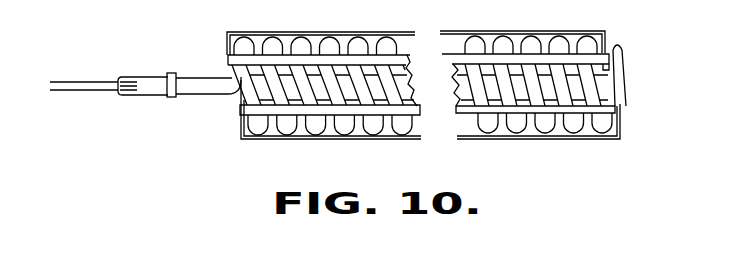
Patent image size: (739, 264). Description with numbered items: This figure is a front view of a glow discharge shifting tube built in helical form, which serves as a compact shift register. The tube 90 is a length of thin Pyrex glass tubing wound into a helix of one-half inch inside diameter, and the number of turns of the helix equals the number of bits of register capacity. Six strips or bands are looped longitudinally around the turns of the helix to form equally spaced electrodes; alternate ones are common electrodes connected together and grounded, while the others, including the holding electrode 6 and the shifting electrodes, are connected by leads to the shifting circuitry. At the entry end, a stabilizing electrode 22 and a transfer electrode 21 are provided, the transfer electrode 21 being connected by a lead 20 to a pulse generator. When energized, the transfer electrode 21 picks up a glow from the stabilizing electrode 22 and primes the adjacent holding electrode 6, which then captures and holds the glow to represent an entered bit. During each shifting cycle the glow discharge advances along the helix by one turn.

The holding electrode 6 is at (282, 32).
The tube 90 is at (372, 127).
The lead 20 is at (171, 155).
The transfer electrode 21 is at (167, 93).
The stabilizing electrode 22 is at (118, 90).